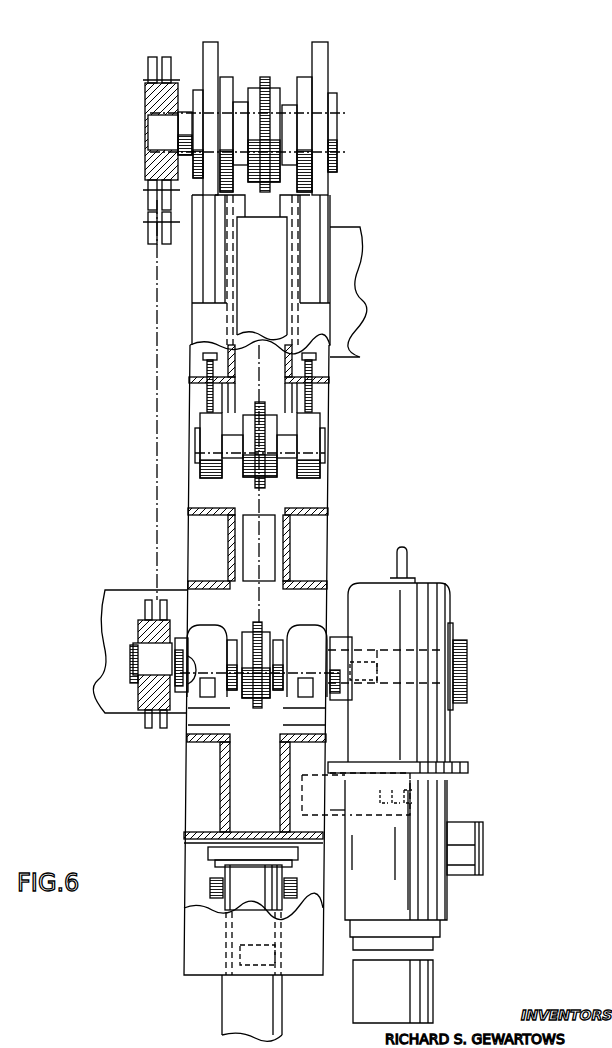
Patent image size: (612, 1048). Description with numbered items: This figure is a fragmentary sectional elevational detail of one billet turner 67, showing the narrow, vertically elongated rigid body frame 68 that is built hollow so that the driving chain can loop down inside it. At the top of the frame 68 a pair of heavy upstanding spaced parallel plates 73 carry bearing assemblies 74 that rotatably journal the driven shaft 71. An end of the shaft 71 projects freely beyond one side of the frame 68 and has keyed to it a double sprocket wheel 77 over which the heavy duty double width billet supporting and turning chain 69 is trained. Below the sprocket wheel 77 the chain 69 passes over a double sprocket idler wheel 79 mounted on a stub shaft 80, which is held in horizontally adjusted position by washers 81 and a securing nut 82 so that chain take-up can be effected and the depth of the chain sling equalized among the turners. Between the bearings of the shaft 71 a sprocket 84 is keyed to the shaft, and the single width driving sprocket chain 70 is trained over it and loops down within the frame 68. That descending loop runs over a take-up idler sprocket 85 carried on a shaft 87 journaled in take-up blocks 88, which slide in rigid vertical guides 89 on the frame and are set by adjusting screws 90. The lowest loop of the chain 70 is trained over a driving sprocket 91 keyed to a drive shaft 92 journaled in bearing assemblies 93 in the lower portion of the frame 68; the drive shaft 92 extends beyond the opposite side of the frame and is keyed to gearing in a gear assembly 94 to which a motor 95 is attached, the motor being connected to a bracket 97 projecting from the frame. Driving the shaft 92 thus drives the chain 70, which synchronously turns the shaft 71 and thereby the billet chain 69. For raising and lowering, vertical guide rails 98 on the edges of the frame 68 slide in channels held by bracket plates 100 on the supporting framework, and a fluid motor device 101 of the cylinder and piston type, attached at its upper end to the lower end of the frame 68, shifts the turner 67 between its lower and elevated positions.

The billet turner 67 is at (362, 206).
The frame 68 is at (292, 560).
The billet supporting and turning sprocket chain 69 is at (157, 474).
The driving sprocket chain 70 is at (257, 545).
The driven shaft 71 is at (198, 110).
The plates 73 is at (318, 58).
The bearing assemblies 74 is at (290, 88).
The double sprocket wheels 77 is at (150, 105).
The double sprocket idler wheel 79 is at (143, 703).
The stub shaft 80 is at (135, 667).
The washers 81 is at (190, 643).
The securing nut 82 is at (190, 672).
The sprockets 84 is at (272, 200).
The take-up idler sprocket 85 is at (280, 468).
The shaft 87 is at (230, 455).
The take-up blocks 88 is at (205, 420).
The vertical guides 89 is at (288, 496).
The adjusting screws 90 is at (205, 360).
The driving sprocket 91 is at (258, 635).
The drive shaft 92 is at (333, 650).
The bearing assemblies 93 is at (200, 628).
The gear assembly 94 is at (440, 610).
The motor 95 is at (430, 900).
The bracket 97 is at (338, 810).
The guide rails 98 is at (242, 268).
The bracket plates 100 is at (355, 282).
The fluid motor device 101 is at (228, 1000).